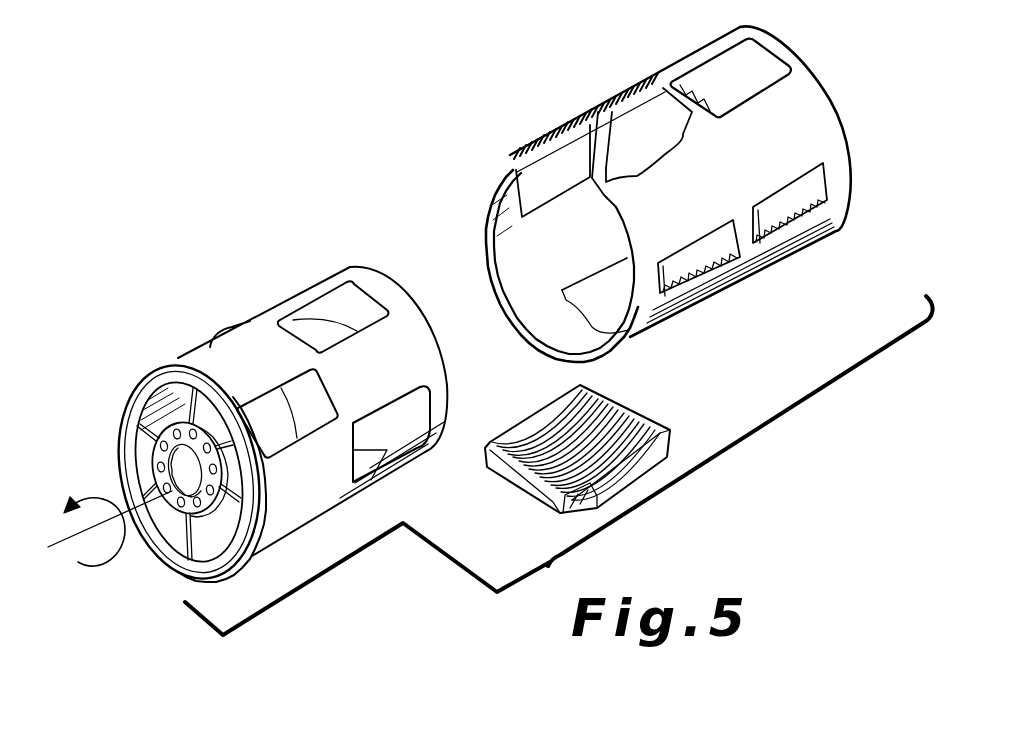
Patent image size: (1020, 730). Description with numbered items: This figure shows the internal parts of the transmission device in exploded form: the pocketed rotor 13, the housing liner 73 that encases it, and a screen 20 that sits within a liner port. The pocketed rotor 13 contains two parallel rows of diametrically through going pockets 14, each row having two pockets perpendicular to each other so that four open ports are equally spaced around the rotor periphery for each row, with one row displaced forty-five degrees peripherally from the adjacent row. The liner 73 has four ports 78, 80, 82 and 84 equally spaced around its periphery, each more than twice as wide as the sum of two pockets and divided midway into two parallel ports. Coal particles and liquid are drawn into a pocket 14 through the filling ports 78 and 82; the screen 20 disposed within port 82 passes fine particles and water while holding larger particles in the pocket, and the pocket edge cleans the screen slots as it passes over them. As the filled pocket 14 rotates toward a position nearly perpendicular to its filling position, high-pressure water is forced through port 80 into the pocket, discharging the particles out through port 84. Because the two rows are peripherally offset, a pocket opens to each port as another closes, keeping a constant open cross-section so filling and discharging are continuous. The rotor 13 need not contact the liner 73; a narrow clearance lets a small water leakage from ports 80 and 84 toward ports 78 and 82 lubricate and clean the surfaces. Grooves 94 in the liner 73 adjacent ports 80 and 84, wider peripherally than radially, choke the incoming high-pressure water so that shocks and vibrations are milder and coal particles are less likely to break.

The pocketed rotor 13 is at (268, 314).
The pockets 14 is at (338, 302).
The housing liner 73 is at (824, 90).
The port 78 is at (636, 87).
The port 80 is at (490, 193).
The port 82 is at (598, 315).
The port 84 is at (722, 240).
The grooves 94 is at (800, 225).
The screen 20 is at (524, 495).